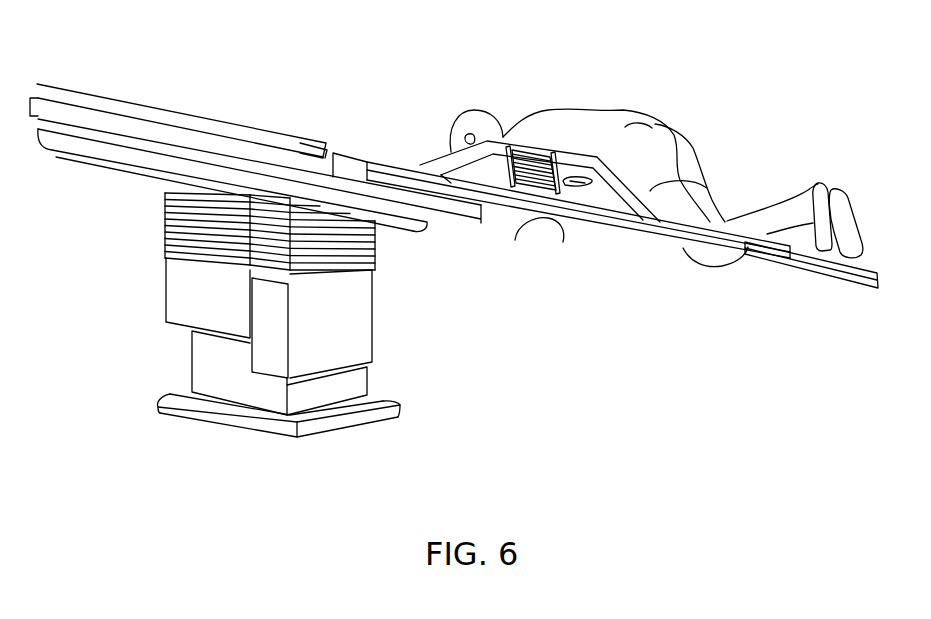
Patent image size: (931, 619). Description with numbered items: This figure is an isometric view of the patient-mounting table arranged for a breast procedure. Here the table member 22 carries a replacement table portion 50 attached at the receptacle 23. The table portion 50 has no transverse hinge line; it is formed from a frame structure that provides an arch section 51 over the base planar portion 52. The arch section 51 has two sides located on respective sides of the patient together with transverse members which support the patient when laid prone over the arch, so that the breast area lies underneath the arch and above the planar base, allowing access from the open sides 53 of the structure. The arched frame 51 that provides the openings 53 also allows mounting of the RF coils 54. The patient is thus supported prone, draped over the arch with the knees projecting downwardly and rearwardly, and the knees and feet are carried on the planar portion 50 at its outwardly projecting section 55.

The table member 22 is at (188, 114).
The receptacle 23 is at (347, 155).
The replacement table portion 50 is at (557, 208).
The arch section 51 is at (580, 153).
The base planar portion 52 is at (613, 228).
The open sides 53 is at (557, 198).
The RF coils 54 is at (522, 150).
The outwardly projecting section 55 is at (750, 250).